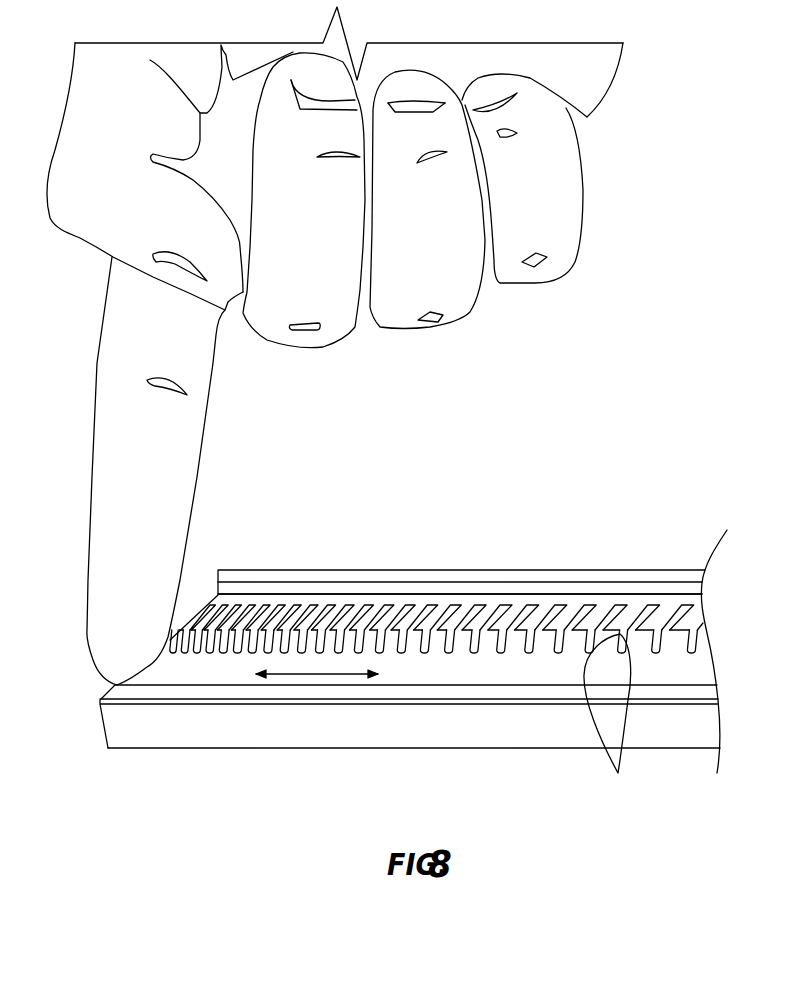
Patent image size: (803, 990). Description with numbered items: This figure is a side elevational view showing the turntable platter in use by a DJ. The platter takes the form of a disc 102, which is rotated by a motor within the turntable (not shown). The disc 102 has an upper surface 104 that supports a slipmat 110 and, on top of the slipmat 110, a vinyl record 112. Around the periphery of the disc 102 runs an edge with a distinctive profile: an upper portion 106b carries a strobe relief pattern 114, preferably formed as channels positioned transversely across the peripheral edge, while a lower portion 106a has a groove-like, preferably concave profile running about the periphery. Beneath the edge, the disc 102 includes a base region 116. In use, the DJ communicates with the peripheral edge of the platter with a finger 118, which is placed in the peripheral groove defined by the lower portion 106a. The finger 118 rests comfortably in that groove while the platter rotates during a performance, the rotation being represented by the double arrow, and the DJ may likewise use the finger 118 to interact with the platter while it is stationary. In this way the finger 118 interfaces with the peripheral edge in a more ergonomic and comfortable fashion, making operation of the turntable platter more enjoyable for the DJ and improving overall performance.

The disc 102 is at (413, 658).
The upper surface 104 is at (461, 551).
The lower portion 106a is at (157, 668).
The upper portion 106b is at (215, 595).
The slipmat 110 is at (386, 590).
The vinyl record 112 is at (460, 578).
The strobe relief pattern 114 is at (610, 718).
The base region 116 is at (271, 726).
The finger 118 is at (125, 643).